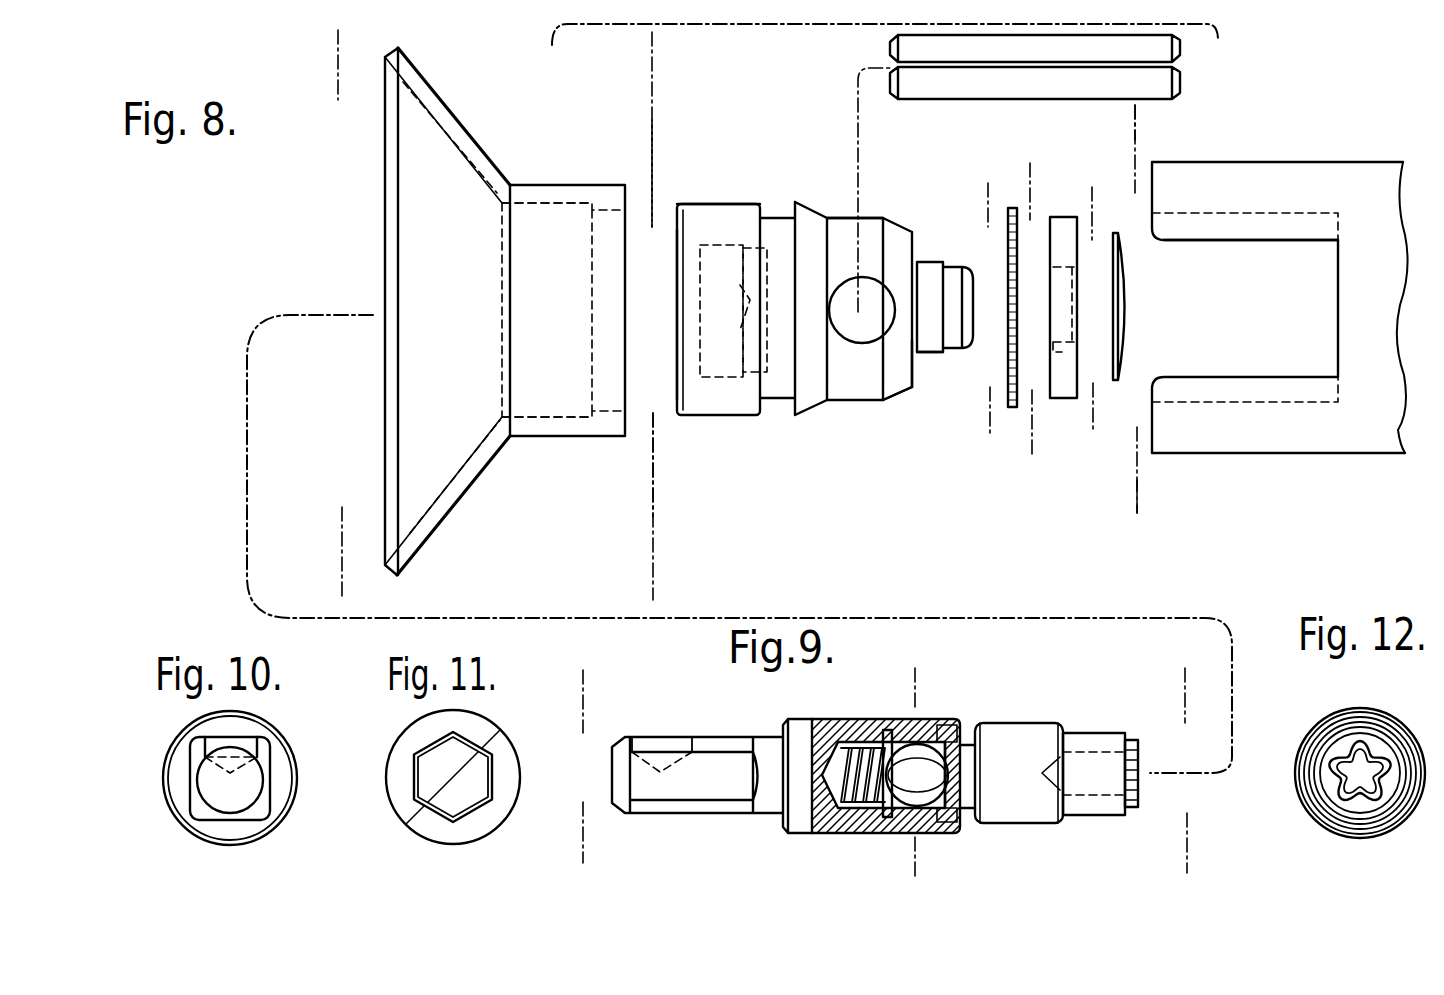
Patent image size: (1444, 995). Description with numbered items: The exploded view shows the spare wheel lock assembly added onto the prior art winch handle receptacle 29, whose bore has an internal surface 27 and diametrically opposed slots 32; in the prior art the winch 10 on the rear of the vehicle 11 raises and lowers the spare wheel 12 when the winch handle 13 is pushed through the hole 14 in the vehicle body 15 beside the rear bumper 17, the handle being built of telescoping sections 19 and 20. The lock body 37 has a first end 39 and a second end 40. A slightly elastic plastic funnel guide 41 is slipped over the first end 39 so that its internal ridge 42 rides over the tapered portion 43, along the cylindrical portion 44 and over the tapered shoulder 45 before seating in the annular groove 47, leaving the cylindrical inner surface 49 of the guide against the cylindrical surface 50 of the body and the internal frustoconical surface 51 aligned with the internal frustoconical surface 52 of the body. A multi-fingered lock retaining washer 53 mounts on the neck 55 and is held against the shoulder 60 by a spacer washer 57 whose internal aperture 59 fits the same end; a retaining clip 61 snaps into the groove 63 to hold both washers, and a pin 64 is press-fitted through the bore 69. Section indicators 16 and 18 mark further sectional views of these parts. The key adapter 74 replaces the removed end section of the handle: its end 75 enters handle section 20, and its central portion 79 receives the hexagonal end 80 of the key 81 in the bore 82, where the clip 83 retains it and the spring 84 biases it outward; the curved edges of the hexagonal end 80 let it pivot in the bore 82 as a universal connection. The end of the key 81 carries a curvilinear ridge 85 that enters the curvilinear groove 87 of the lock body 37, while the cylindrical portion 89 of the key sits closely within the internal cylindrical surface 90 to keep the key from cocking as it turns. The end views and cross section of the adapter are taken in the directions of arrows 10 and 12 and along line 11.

In FIG. 8, the winch handle 13 is at (1120, 118).
In FIG. 8, the hole 14 is at (1077, 148).
In FIG. 8, the vehicle body 15 is at (1047, 195).
In FIG. 8, the section line 16- 16 is at (988, 175).
In FIG. 8, the rear bumper 17 is at (990, 195).
In FIG. 8, the section line 18- 18 is at (638, 152).
In FIG. 8, the handle section 19 is at (400, 42).
In FIG. 8, the handle section 20 is at (602, 43).
In FIG. 9, the winch 10 is at (632, 682).
In FIG. 9, the vehicle 11 is at (963, 679).
In FIG. 9, the spare wheel 12 is at (1130, 679).
In FIG. 8, the internal surface 27 is at (1295, 212).
In FIG. 8, the winch handle receptacle 29 is at (1347, 162).
In FIG. 8, the slots 32 is at (1257, 242).
In FIG. 8, the lock body 37 is at (868, 218).
In FIG. 8, the first end 39 is at (935, 352).
In FIG. 8, the second end 40 is at (713, 417).
In FIG. 8, the funnel guide 41 is at (462, 112).
In FIG. 8, the internal ridge 42 is at (590, 222).
In FIG. 8, the tapered portion 43 is at (817, 407).
In FIG. 8, the cylindrical portion 44 is at (855, 393).
In FIG. 8, the tapered shoulder 45 is at (812, 208).
In FIG. 8, the annular groove 47 is at (775, 400).
In FIG. 8, the cylindrical inner surface 49 is at (560, 207).
In FIG. 8, the cylindrical surface 50 is at (700, 204).
In FIG. 8, the internal frustoconical surface 51 is at (463, 157).
In FIG. 8, the internal frustoconical surface 52 is at (690, 247).
In FIG. 8, the lock retaining washer 53 is at (1018, 293).
In FIG. 8, the neck 55 is at (930, 262).
In FIG. 8, the spacer washer 57 is at (1070, 323).
In FIG. 8, the internal aperture 59 is at (1080, 343).
In FIG. 8, the shoulder 60 is at (915, 375).
In FIG. 8, the retaining clip 61 is at (1127, 267).
In FIG. 8, the groove 63 is at (955, 267).
In FIG. 8, the pin 64 is at (933, 92).
In FIG. 8, the bore 69 is at (838, 332).
In FIG. 9, the key adapter 74 is at (797, 720).
In FIG. 10, the key adapter 74 is at (188, 740).
In FIG. 12, the key adapter 74 is at (1380, 830).
In FIG. 9, the end 75 is at (713, 813).
In FIG. 10, the end 75 is at (260, 810).
In FIG. 9, the central portion 79 is at (840, 835).
In FIG. 9, the hexagonal end 80 is at (938, 822).
In FIG. 11, the hexagonal end 80 is at (472, 800).
In FIG. 9, the key 81 is at (1017, 723).
In FIG. 12, the key 81 is at (1393, 723).
In FIG. 9, the bore 82 is at (918, 720).
In FIG. 11, the bore 82 is at (443, 803).
In FIG. 9, the clip 83 is at (967, 728).
In FIG. 9, the spring 84 is at (853, 720).
In FIG. 9, the curvilinear ridge 85 is at (1143, 807).
In FIG. 12, the curvilinear ridge 85 is at (1340, 725).
In FIG. 8, the curvilinear groove 87 is at (748, 335).
In FIG. 9, the cylindrical portion 89 is at (1107, 733).
In FIG. 12, the cylindrical portion 89 is at (1335, 823).
In FIG. 8, the internal cylindrical surface 90 is at (721, 311).